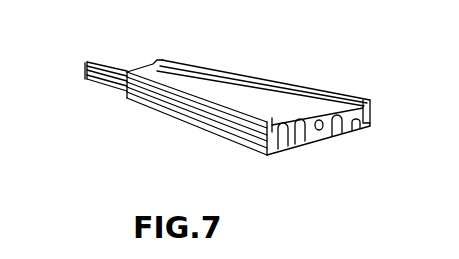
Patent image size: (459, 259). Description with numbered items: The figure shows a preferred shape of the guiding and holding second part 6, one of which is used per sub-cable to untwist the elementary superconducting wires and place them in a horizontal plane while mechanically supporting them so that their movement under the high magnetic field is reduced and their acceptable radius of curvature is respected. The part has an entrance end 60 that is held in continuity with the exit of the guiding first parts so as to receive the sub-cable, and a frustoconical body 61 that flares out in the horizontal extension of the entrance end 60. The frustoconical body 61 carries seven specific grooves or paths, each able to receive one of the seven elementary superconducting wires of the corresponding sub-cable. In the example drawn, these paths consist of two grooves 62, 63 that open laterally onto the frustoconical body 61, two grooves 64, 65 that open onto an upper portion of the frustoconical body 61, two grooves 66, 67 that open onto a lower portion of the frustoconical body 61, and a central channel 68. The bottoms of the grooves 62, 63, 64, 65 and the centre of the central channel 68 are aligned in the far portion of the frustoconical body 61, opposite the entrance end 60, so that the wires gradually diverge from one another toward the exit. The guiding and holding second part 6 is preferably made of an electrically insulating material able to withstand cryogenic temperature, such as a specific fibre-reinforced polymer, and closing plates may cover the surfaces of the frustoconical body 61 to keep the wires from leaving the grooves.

The guiding and holding second part 6 is at (158, 125).
The entrance end 60 is at (114, 64).
The frustoconical body 61 is at (244, 96).
The groove 62 is at (242, 131).
The groove 63 is at (369, 107).
The groove 64 is at (284, 134).
The groove 65 is at (354, 123).
The groove 66 is at (300, 134).
The groove 67 is at (338, 129).
The central channel 68 is at (320, 125).